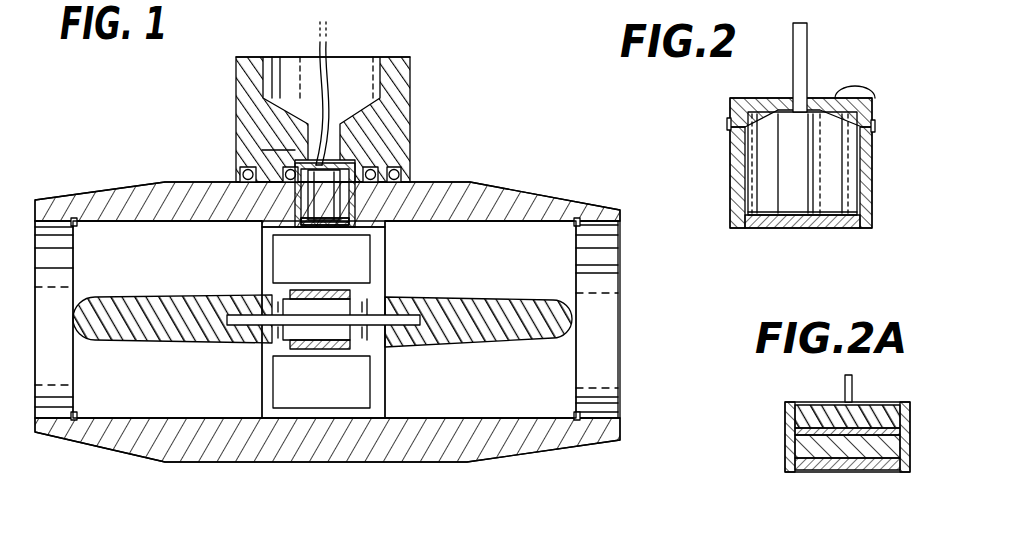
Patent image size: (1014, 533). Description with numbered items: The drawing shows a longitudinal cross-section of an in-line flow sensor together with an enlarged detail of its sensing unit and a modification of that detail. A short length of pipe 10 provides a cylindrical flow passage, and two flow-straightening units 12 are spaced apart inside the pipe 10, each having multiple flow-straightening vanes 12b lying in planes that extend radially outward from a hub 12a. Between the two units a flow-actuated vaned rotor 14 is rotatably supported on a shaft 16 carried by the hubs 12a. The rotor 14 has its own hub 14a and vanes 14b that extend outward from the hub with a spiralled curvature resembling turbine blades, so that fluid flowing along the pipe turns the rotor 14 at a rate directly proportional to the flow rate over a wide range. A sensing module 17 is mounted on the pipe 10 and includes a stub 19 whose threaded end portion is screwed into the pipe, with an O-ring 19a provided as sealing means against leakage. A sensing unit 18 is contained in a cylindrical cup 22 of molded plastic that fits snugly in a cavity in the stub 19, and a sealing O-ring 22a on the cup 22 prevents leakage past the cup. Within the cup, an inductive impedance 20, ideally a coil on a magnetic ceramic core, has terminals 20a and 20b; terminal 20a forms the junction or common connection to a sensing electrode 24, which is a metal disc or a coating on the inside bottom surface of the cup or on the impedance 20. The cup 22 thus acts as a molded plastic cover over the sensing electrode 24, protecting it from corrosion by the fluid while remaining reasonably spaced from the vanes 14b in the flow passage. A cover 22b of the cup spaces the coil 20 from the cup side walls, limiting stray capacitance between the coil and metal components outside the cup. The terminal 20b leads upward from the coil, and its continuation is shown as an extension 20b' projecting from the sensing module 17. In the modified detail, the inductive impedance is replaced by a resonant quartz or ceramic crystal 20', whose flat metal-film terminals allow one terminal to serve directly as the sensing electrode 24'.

In FIG. 1, the pipe 10 is at (478, 198).
In FIG. 1, the flow-straightening unit 12 is at (125, 240).
In FIG. 1, the hub 12a is at (122, 333).
In FIG. 1, the flow-straightening vanes 12b is at (190, 279).
In FIG. 1, the vaned rotor 14 is at (285, 363).
In FIG. 1, the hub 14a is at (321, 262).
In FIG. 1, the vanes 14b is at (288, 245).
In FIG. 1, the shaft 16 is at (408, 333).
In FIG. 1, the sensing module 17 is at (230, 100).
In FIG. 1, the sensing unit 18 is at (348, 173).
In FIG. 2, the sensing unit 18 is at (718, 190).
In FIG. 1, the stub 19 is at (400, 90).
In FIG. 1, the O-ring 19a is at (240, 175).
In FIG. 2, the inductive impedance 20 is at (830, 163).
In FIG. 2A, the resonant ceramic crystal 20' is at (806, 423).
In FIG. 2, the terminal 20a is at (798, 215).
In FIG. 1, the terminal 20b is at (400, 131).
In FIG. 2, the terminal 20b is at (839, 67).
In FIG. 1, the stem extension 20b' is at (365, 43).
In FIG. 2, the cup 22 is at (872, 196).
In FIG. 1, the sealing O-ring 22a is at (265, 150).
In FIG. 2, the cover 22b is at (862, 100).
In FIG. 1, the sensing electrode 24 is at (369, 240).
In FIG. 2, the sensing electrode 24 is at (787, 240).
In FIG. 2A, the sensing electrode 24' is at (847, 484).